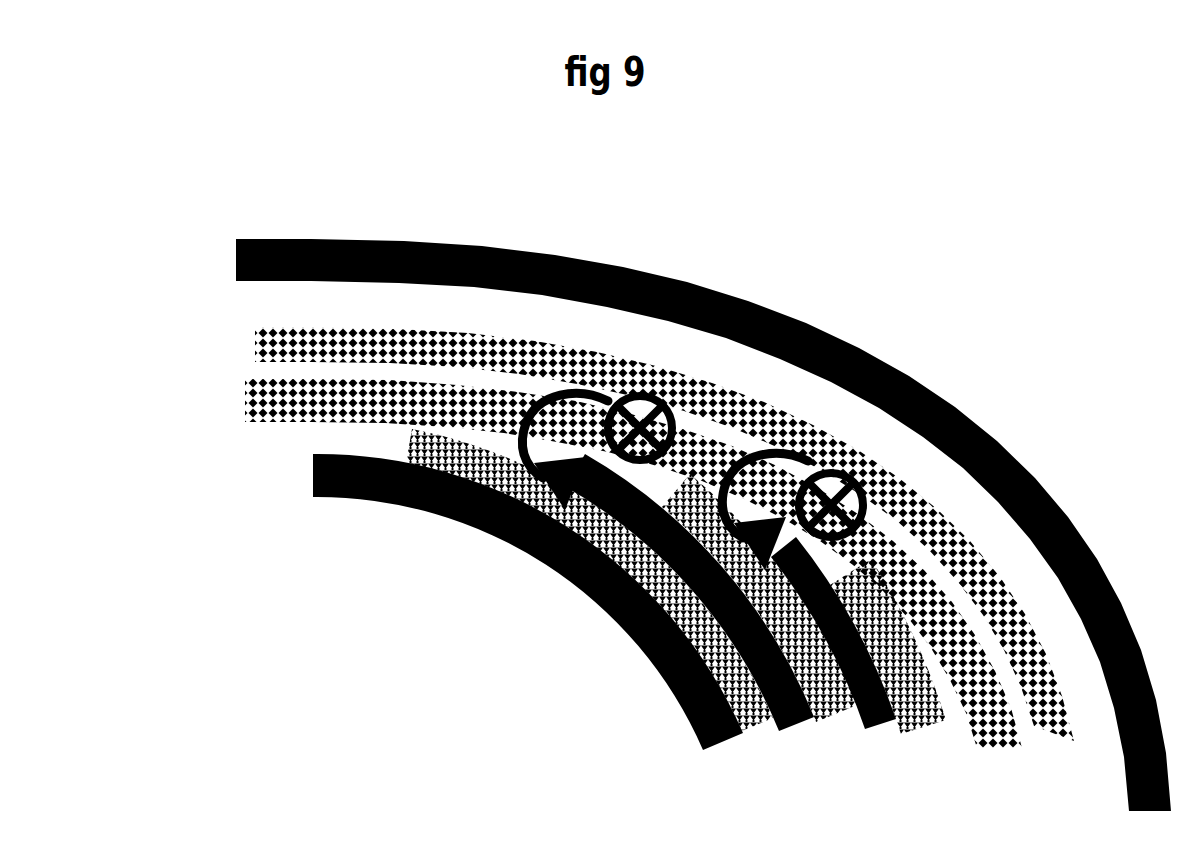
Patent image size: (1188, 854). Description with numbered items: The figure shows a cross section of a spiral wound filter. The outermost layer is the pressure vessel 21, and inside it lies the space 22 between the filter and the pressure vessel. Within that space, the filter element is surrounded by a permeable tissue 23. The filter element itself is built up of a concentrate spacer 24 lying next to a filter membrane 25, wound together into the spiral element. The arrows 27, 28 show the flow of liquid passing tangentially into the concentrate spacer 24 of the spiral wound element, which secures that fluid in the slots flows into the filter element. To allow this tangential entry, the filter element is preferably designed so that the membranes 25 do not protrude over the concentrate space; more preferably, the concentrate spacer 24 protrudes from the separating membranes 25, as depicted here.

The pressure vessel 21 is at (228, 251).
The space between the filter and the pressure vessel 22 is at (269, 296).
The permeable tissue 23 is at (263, 338).
The concentrate spacer 24 is at (419, 445).
The filter membrane 25 is at (312, 476).
The arrow 27 is at (533, 438).
The arrow 28 is at (818, 463).